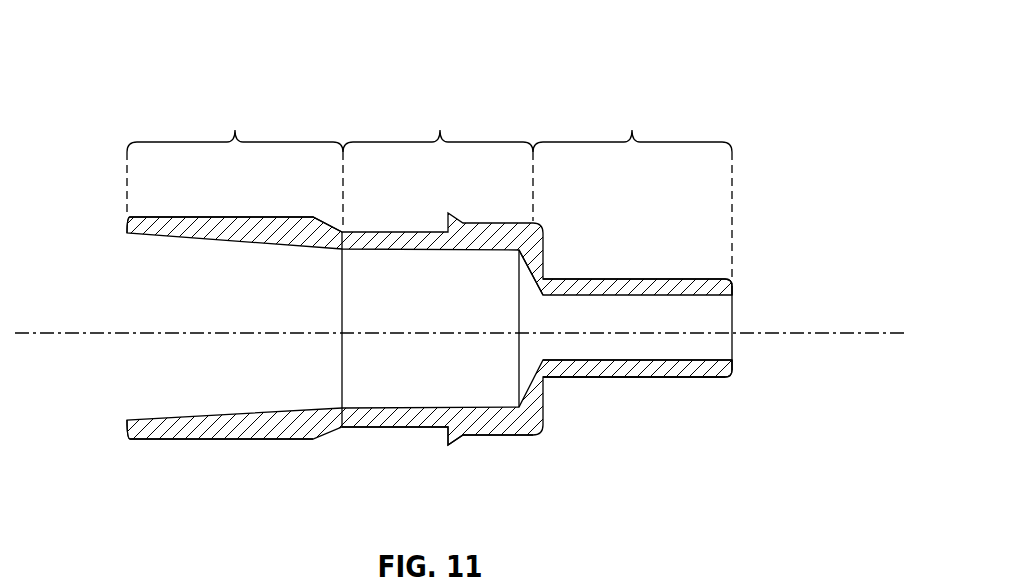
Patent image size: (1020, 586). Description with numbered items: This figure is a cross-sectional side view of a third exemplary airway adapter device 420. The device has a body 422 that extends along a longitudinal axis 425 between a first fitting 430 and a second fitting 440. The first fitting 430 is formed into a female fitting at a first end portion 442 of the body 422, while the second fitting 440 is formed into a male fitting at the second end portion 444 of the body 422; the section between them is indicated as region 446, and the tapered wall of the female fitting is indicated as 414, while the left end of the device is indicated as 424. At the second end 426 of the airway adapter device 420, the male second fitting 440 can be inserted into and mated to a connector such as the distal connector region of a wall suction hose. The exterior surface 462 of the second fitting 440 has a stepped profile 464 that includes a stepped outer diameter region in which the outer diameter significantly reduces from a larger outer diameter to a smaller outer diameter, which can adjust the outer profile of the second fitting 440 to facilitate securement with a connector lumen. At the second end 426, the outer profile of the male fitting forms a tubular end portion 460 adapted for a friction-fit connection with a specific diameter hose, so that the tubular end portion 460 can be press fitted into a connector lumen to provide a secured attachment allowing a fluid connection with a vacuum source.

The airway adapter device 420 is at (745, 82).
The first end portion 442 is at (235, 166).
The intermediate section 446 is at (438, 162).
The second end portion 444 is at (632, 190).
The tapered wall 414 is at (222, 216).
The stepped profile 464 is at (545, 243).
The second fitting 440 is at (638, 270).
The proximal end 424 is at (127, 333).
The second end 426 is at (733, 331).
The longitudinal axis 425 is at (880, 333).
The first fitting 430 is at (141, 456).
The body 422 is at (395, 427).
The exterior surface 462 is at (618, 378).
The tubular end portion 460 is at (683, 378).